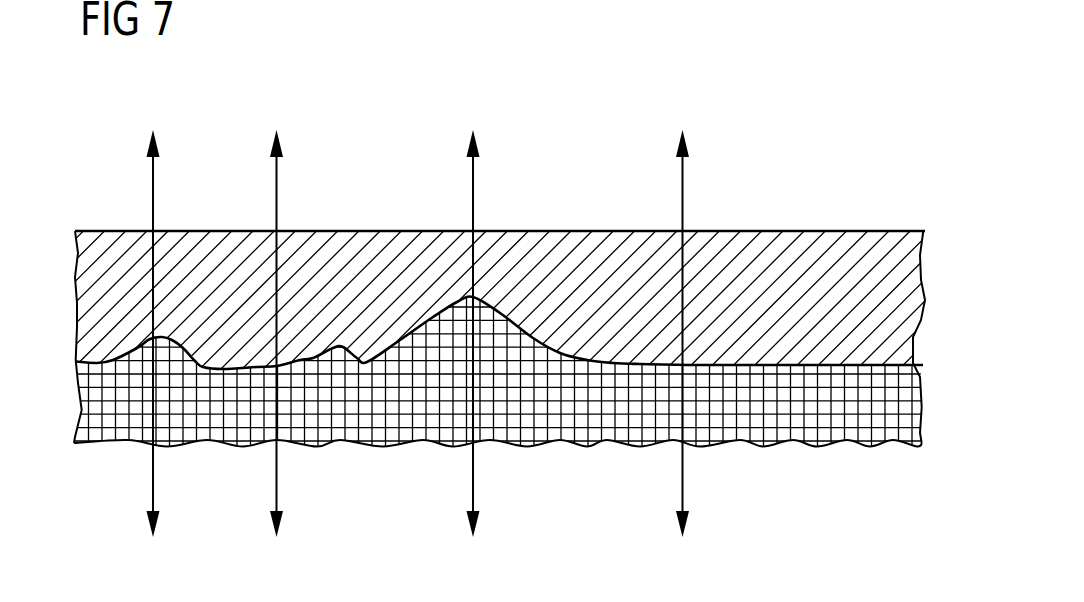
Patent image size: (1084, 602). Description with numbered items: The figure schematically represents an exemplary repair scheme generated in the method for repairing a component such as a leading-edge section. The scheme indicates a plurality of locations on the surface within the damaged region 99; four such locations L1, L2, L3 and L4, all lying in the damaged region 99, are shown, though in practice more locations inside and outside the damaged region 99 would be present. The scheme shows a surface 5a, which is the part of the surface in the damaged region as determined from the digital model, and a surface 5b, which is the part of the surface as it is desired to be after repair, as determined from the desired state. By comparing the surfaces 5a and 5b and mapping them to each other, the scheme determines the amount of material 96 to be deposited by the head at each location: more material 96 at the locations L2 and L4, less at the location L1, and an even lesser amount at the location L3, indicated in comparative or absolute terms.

The damaged region 99 is at (529, 297).
The material 96 is at (222, 262).
The surface as desired post repair 5b is at (568, 230).
The surface in the damaged region 5a is at (773, 364).
The location L1 is at (155, 314).
The location L2 is at (278, 314).
The location L3 is at (476, 315).
The location L4 is at (685, 314).